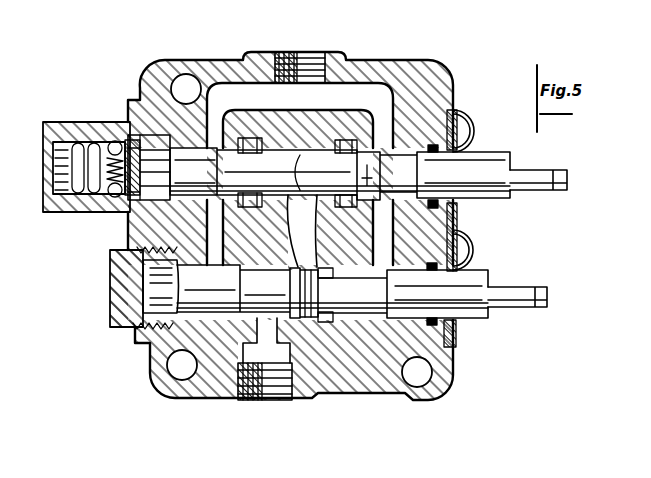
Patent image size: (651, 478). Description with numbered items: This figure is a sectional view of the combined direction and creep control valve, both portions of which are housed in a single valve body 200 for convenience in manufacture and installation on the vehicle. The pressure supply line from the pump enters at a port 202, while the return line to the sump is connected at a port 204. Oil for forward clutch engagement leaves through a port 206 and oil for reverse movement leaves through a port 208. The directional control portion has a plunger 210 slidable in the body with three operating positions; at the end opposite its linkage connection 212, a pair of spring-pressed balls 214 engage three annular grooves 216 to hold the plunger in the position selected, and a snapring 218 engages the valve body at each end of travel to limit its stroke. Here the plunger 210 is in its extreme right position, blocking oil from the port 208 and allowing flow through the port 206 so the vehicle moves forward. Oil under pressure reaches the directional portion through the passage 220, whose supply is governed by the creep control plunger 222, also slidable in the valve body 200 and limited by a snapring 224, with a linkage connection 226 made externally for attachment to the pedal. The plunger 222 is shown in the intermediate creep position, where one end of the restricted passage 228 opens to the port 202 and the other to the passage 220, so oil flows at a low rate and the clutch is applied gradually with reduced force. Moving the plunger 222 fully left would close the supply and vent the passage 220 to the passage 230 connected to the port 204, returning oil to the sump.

The valve body 200 is at (160, 59).
The port 202 is at (280, 398).
The port 204 is at (300, 52).
The port 206 is at (342, 140).
The port 208 is at (248, 137).
The plunger 210 is at (477, 153).
The linkage connection 212 is at (540, 170).
The spring-pressed balls 214 is at (112, 212).
The annular grooves 216 is at (70, 213).
The snapring 218 is at (166, 142).
The passage 220 is at (310, 228).
The plunger 222 is at (468, 278).
The snapring 224 is at (150, 345).
The linkage connection 226 is at (512, 310).
The restricted passage 228 is at (288, 300).
The passage 230 is at (388, 244).